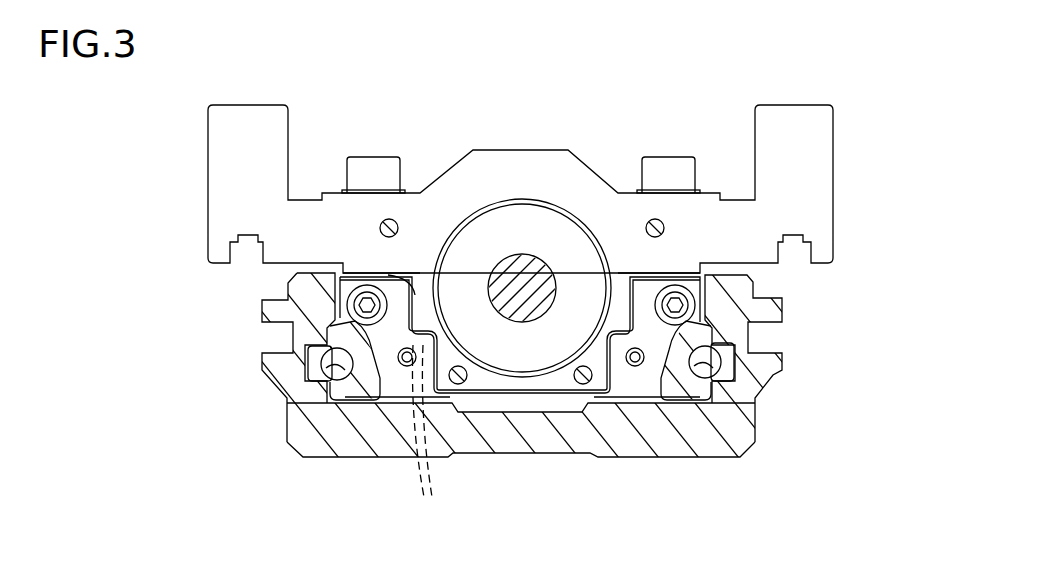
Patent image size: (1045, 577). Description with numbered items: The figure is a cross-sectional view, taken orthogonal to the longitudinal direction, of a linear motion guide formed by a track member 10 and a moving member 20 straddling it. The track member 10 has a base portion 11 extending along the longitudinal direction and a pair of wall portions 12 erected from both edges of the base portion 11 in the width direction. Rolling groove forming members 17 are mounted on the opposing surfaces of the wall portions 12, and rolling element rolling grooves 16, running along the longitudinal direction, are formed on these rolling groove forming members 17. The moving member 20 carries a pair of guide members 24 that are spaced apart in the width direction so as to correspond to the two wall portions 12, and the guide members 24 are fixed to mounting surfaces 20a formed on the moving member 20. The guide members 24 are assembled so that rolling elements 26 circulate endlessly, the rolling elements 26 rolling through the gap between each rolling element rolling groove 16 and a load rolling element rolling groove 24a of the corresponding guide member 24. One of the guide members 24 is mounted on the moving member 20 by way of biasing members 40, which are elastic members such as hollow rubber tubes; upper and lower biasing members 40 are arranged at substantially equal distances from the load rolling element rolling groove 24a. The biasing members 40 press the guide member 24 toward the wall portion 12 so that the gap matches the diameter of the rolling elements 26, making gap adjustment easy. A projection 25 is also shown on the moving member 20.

The track member 10 is at (670, 458).
The base portion 11 is at (558, 440).
The wall portion 12 is at (293, 415).
The rolling element rolling groove 16 is at (327, 382).
The rolling groove forming member 17 is at (310, 362).
The moving member 20 is at (815, 178).
The mounting surface 20a is at (420, 272).
The guide member 24 is at (375, 395).
The load rolling element rolling groove 24a is at (347, 402).
The projection 25 is at (668, 162).
The rolling element 26 is at (317, 345).
The biasing member 40 is at (425, 439).